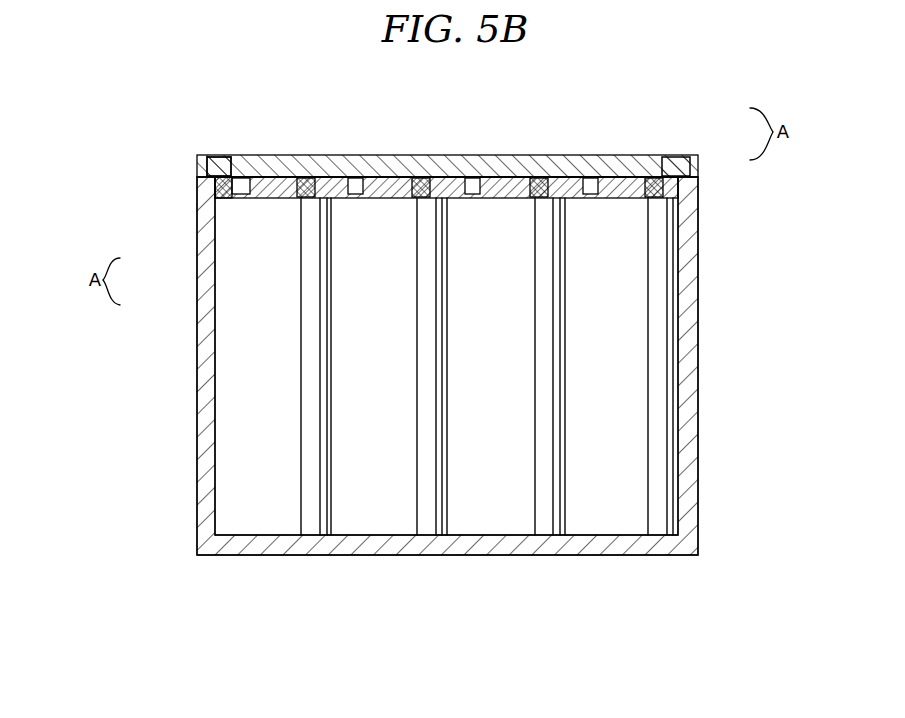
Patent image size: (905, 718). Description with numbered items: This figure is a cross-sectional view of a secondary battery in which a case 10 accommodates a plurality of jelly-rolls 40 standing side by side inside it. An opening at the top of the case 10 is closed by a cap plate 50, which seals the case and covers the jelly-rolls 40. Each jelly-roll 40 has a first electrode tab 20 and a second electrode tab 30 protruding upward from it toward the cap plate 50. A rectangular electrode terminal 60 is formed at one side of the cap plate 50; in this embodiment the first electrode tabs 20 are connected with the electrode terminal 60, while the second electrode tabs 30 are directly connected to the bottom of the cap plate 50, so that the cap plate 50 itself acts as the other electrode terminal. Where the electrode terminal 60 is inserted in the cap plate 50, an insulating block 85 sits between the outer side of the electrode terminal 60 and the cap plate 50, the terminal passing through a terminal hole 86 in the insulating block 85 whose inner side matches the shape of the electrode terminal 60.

The case 10 is at (188, 408).
The first electrode tab 20 is at (439, 183).
The second electrode tab 30 is at (680, 179).
The jelly-roll 40 is at (262, 485).
The cap plate 50 is at (437, 194).
The electrode terminal 60 is at (441, 153).
The insulating block 85 is at (231, 152).
The terminal hole 86 is at (217, 180).